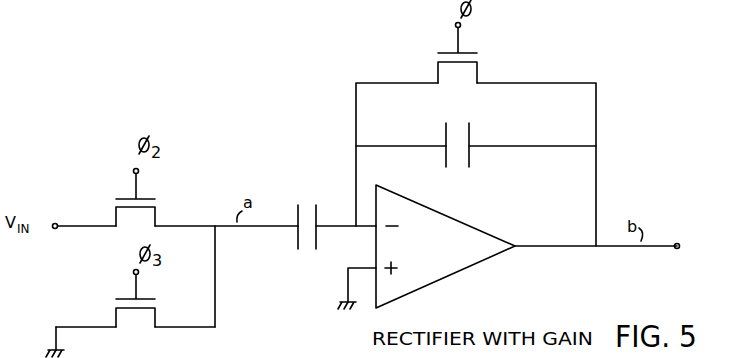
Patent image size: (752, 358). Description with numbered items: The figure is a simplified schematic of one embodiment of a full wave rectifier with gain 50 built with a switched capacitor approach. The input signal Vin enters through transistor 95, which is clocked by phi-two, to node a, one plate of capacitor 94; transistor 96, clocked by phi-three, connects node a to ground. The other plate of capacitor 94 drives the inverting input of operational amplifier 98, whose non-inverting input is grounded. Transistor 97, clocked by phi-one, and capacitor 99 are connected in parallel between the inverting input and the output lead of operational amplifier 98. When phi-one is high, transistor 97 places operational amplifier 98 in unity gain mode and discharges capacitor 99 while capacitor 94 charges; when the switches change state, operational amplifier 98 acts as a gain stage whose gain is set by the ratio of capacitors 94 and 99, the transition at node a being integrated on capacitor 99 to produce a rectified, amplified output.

The full wave rectifier with gain 50 is at (300, 112).
The capacitor 94 is at (321, 212).
The transistor 95 is at (116, 188).
The transistor 96 is at (112, 294).
The transistor 97 is at (436, 52).
The operational amplifier 98 is at (519, 257).
The capacitor 99 is at (474, 135).